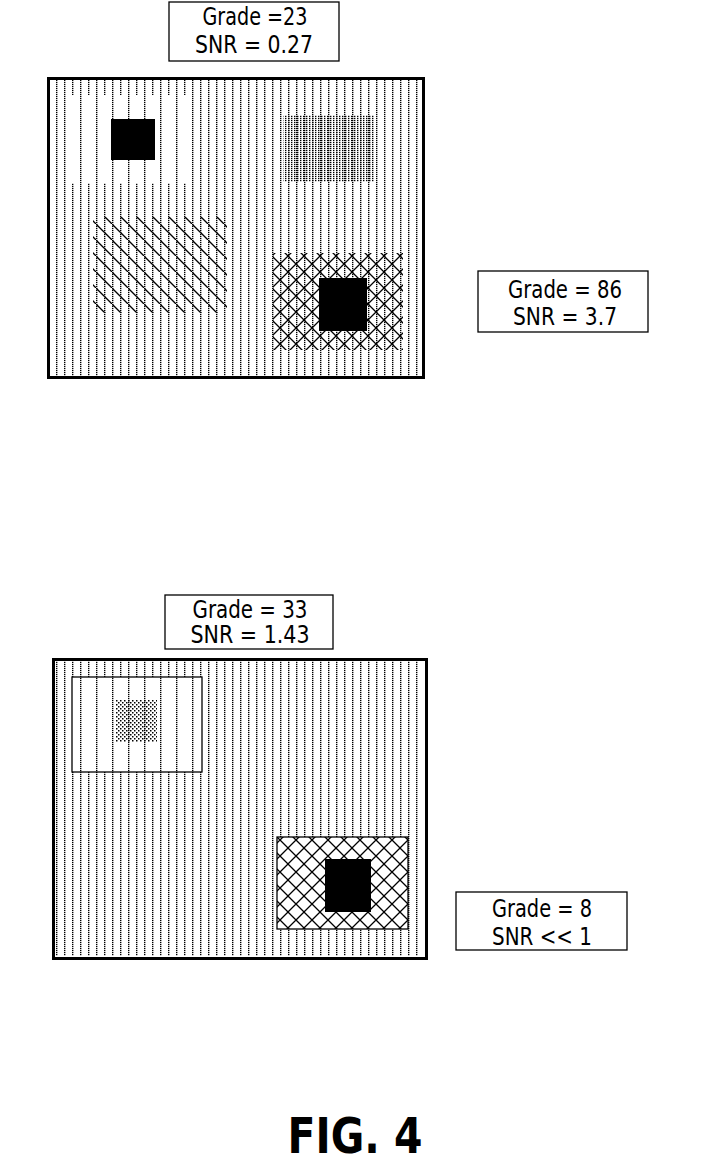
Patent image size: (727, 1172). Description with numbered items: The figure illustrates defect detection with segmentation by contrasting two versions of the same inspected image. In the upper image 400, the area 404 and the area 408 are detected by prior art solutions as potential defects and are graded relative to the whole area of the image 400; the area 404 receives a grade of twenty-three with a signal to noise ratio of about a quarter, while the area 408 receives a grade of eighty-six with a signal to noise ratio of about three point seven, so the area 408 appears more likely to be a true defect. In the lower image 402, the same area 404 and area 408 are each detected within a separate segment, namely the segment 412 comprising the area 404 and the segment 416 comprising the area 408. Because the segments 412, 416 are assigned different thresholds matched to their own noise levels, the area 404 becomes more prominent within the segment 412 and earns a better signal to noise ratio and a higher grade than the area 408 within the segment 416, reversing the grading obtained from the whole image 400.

The image 400 is at (424, 145).
The image 402 is at (428, 728).
The area 404 is at (130, 119).
The area 408 is at (367, 298).
The segment 412 is at (73, 678).
The segment 416 is at (408, 838).